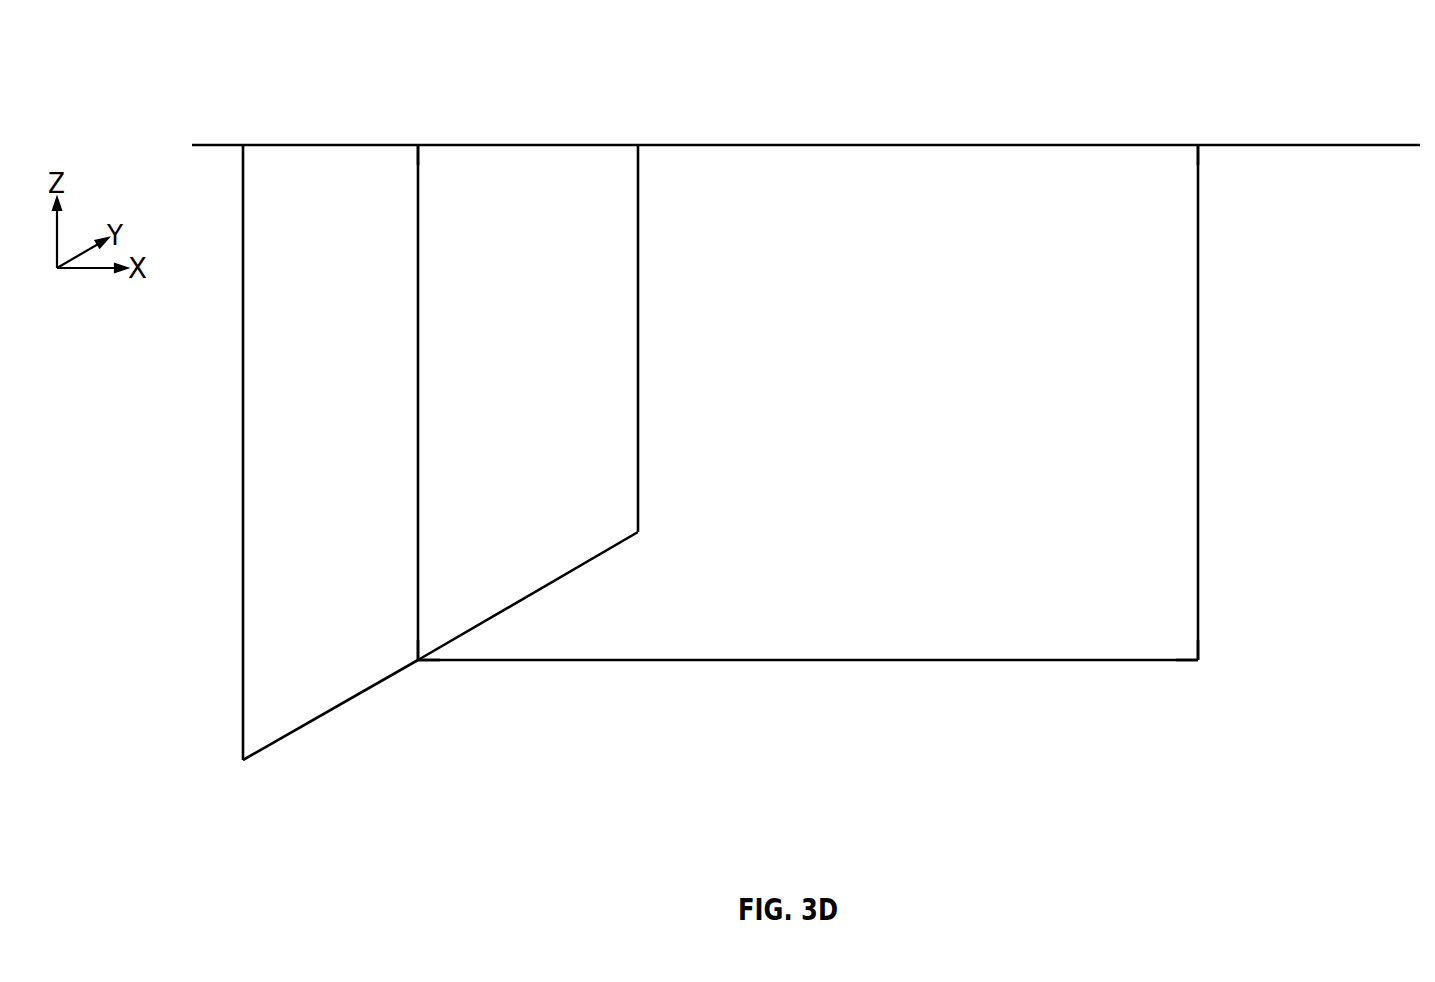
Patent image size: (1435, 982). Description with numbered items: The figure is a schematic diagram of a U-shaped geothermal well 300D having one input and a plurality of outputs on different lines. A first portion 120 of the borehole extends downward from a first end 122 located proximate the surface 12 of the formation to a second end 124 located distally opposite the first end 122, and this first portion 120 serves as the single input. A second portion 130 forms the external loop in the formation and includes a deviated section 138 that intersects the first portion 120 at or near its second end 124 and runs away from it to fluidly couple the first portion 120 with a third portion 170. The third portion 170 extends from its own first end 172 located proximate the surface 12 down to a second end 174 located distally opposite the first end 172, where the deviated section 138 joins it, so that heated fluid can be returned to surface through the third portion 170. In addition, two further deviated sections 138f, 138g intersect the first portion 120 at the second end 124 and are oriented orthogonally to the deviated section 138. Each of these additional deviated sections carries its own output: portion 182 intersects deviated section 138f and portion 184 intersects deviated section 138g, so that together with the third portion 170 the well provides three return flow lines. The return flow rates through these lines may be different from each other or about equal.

The U-shaped geothermal well 300D is at (604, 41).
The surface 12 is at (966, 145).
The first portion 120 is at (418, 417).
The first end 122 is at (418, 145).
The second end 124 is at (418, 660).
The second portion 130 is at (522, 705).
The deviated section 138 is at (910, 660).
The deviated section 138f is at (280, 738).
The deviated section 138g is at (570, 570).
The third portion 170 is at (1198, 418).
The first end 172 is at (1198, 145).
The second end 174 is at (1198, 660).
The portion 182 is at (243, 525).
The portion 184 is at (638, 430).